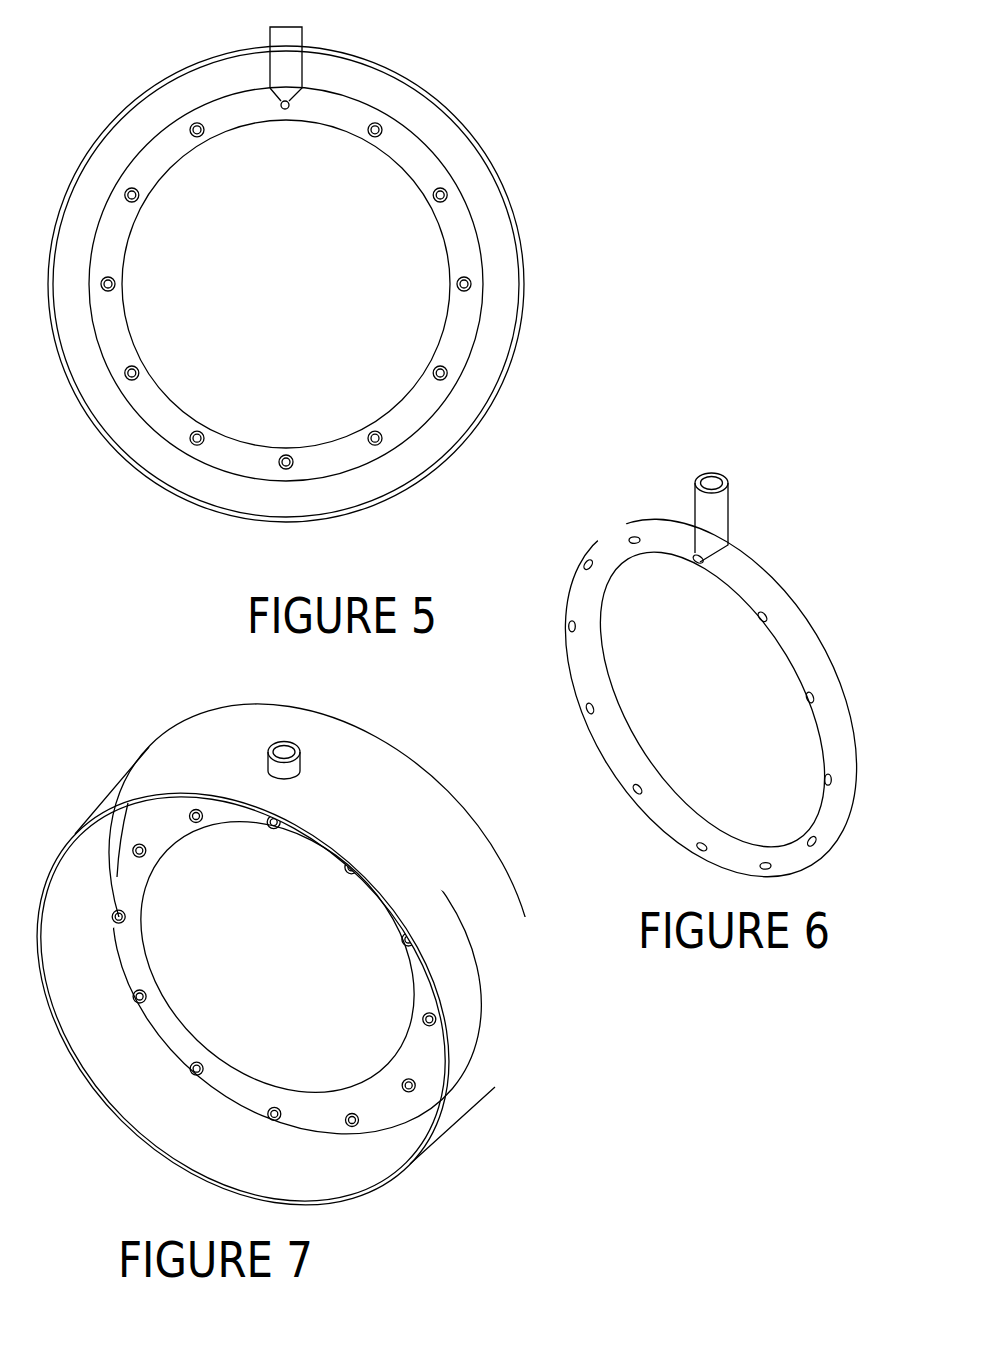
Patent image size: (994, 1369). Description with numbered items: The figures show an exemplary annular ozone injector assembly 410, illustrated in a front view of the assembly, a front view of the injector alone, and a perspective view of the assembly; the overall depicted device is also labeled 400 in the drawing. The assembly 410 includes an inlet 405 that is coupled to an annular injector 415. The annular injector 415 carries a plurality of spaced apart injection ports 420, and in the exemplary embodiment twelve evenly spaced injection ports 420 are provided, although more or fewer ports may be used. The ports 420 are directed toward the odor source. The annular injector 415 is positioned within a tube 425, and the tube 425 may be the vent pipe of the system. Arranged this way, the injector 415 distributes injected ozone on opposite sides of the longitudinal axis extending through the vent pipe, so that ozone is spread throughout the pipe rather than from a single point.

In FIG. 5, the sealing ring assembly 400 is at (347, 344).
In FIG. 5, the inlet 405 is at (290, 37).
In FIG. 6, the inlet 405 is at (693, 507).
In FIG. 7, the inlet 405 is at (300, 765).
In FIG. 5, the annular ozone injector assembly 410 is at (473, 235).
In FIG. 6, the annular ozone injector assembly 410 is at (568, 613).
In FIG. 7, the annular ozone injector assembly 410 is at (242, 1108).
In FIG. 5, the annular injector 415 is at (458, 322).
In FIG. 6, the annular injector 415 is at (673, 822).
In FIG. 7, the annular injector 415 is at (328, 1122).
In FIG. 5, the injection ports 420 is at (373, 440).
In FIG. 6, the injection ports 420 is at (588, 714).
In FIG. 7, the injection ports 420 is at (410, 1100).
In FIG. 5, the tube 425 is at (170, 490).
In FIG. 7, the tube 425 is at (495, 1058).